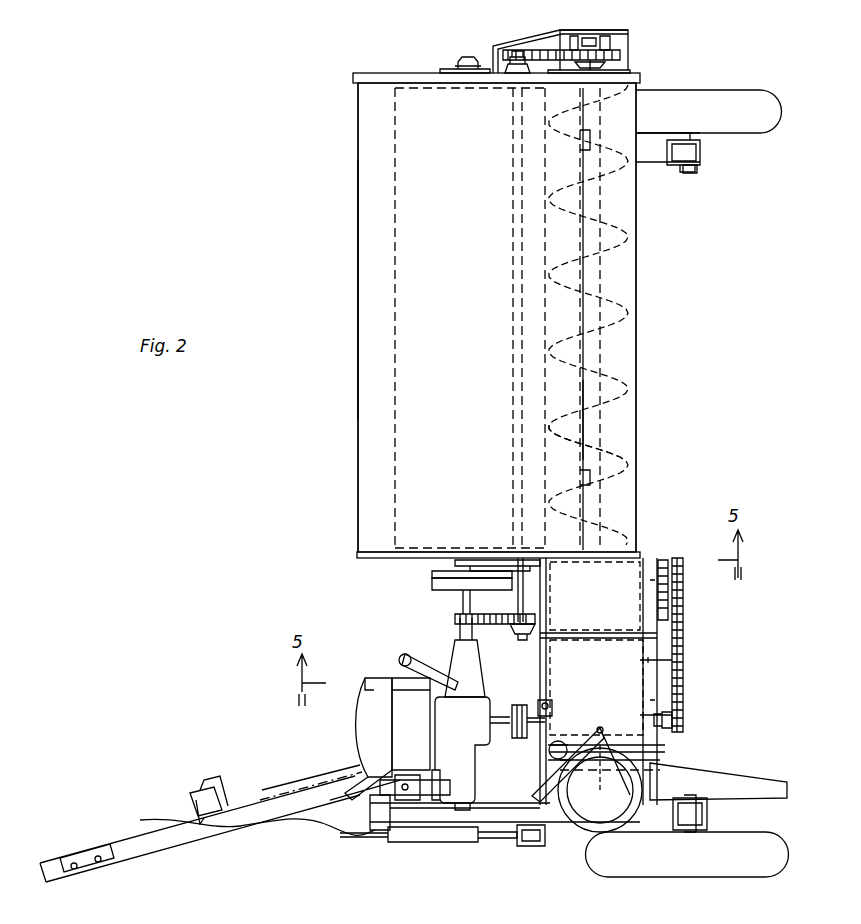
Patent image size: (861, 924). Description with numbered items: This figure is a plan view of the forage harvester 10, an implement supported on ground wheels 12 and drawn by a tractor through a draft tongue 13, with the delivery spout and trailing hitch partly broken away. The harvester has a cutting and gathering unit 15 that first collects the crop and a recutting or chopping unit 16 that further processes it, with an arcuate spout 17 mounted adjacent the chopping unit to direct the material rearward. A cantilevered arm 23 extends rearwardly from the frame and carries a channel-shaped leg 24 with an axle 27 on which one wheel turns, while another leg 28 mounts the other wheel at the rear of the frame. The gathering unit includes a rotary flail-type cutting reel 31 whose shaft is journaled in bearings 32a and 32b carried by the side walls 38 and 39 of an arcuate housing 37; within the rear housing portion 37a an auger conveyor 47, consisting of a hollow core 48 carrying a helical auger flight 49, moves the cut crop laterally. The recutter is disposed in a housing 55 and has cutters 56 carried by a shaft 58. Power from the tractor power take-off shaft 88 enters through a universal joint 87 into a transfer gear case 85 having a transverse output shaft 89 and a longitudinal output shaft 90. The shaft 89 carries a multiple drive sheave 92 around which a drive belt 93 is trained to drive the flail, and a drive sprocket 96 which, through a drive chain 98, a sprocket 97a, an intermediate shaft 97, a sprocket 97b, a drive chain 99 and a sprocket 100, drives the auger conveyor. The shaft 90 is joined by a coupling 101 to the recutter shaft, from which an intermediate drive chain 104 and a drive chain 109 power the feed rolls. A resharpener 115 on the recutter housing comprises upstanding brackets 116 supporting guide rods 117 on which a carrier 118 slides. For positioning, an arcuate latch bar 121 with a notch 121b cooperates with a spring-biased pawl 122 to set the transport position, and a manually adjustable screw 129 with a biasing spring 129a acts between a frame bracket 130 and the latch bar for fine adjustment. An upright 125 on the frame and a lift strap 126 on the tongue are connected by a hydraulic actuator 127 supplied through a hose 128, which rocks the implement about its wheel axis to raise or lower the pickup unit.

The forage harvester 10 is at (350, 516).
The ground wheels 12 is at (710, 96).
The draft tongue 13 is at (108, 838).
The cutting and gathering unit 15 is at (358, 215).
The recutting or chopping unit 16 is at (666, 680).
The arcuate spout 17 is at (664, 800).
The cantilevered arm 23 is at (654, 162).
The leg 24 is at (698, 160).
The axle 27 is at (690, 174).
The leg 28 is at (708, 822).
The rotary flail-type cutting reel 31 is at (387, 424).
The bearing 32a is at (463, 68).
The bearing 32b is at (495, 560).
The arcuate housing 37 is at (358, 296).
The rear housing portion 37a is at (636, 325).
The side wall 38 is at (368, 76).
The side wall 39 is at (349, 560).
The auger conveyor 47 is at (634, 389).
The hollow core 48 is at (585, 420).
The helical auger flight 49 is at (605, 455).
The housing 55 is at (672, 714).
The cutters 56 is at (672, 660).
The shaft 58 is at (552, 708).
The transfer gear case 85 is at (472, 780).
The universal joint 87 is at (404, 830).
The power take-off shaft 88 is at (300, 818).
The transverse output shaft 89 is at (465, 604).
The longitudinal output shaft 90 is at (502, 716).
The multiple drive sheave 92 is at (436, 585).
The drive belt 93 is at (432, 574).
The drive sprocket 96 is at (460, 680).
The intermediate shaft 97 is at (505, 164).
The sprocket 97a is at (530, 630).
The sprocket 97b is at (515, 51).
The drive chain 98 is at (512, 616).
The drive chain 99 is at (560, 44).
The sprocket 100 is at (594, 40).
The coupling 101 is at (526, 704).
The intermediate drive chain 104 is at (684, 630).
The drive chain 109 is at (663, 560).
The resharpener 115 is at (628, 718).
The upstanding brackets 116 is at (552, 758).
The guide rods 117 is at (612, 760).
The carrier 118 is at (562, 758).
The latch bar 121 is at (362, 728).
The positioning notch 121b is at (368, 684).
The spring-biased pawl 122 is at (375, 778).
The upright 125 is at (542, 842).
The lift strap 126 is at (392, 822).
The hydraulic actuator 127 is at (458, 840).
The hose 128 is at (266, 830).
The manually adjustable screw 129 is at (411, 724).
The biasing spring 129a is at (399, 660).
The bracket 130 is at (428, 666).